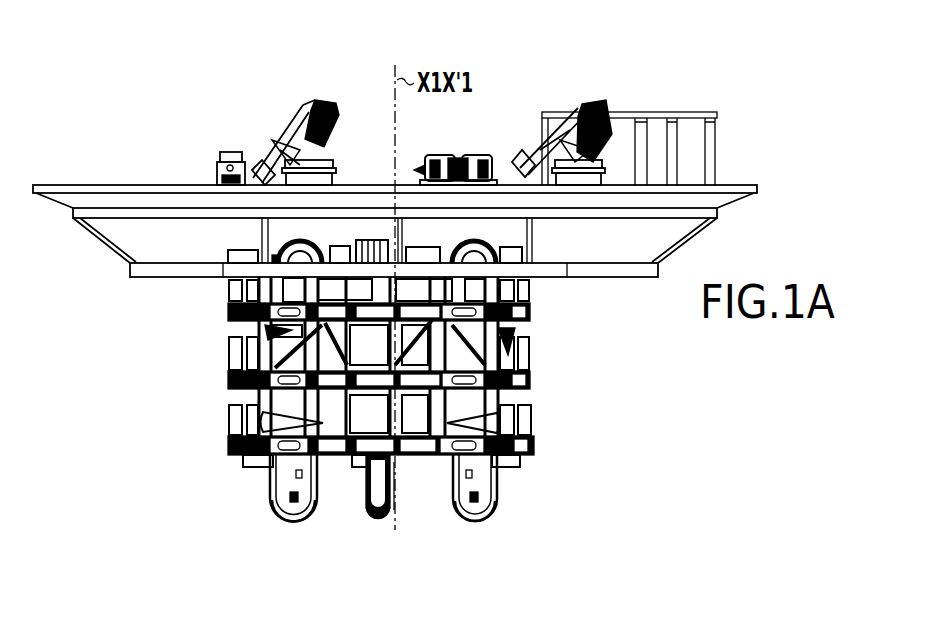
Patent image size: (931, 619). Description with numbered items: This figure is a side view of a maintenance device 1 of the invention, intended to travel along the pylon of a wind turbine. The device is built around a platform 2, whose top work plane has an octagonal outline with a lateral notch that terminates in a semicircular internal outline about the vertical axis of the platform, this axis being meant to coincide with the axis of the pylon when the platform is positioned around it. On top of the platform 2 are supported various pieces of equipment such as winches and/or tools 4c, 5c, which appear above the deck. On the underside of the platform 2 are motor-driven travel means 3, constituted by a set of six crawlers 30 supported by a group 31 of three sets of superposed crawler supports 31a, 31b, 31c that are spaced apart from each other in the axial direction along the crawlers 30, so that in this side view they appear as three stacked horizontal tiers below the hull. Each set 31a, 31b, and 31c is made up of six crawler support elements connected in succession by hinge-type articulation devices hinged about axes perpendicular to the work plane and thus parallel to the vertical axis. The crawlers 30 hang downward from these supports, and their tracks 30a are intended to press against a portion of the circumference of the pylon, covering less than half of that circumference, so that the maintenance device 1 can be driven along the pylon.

The maintenance device 1 is at (43, 290).
The platform 2 is at (116, 282).
The motor-driven travel means 3 is at (200, 298).
The winches and/or tools 4c is at (217, 162).
The winches and/or tools 5c is at (585, 108).
The crawlers 30 is at (260, 494).
The tracks 30a is at (303, 521).
The group of crawler supports 31 is at (140, 372).
The first set of crawler supports 31a is at (232, 323).
The second set of crawler supports 31b is at (232, 383).
The third set of crawler supports 31c is at (232, 450).